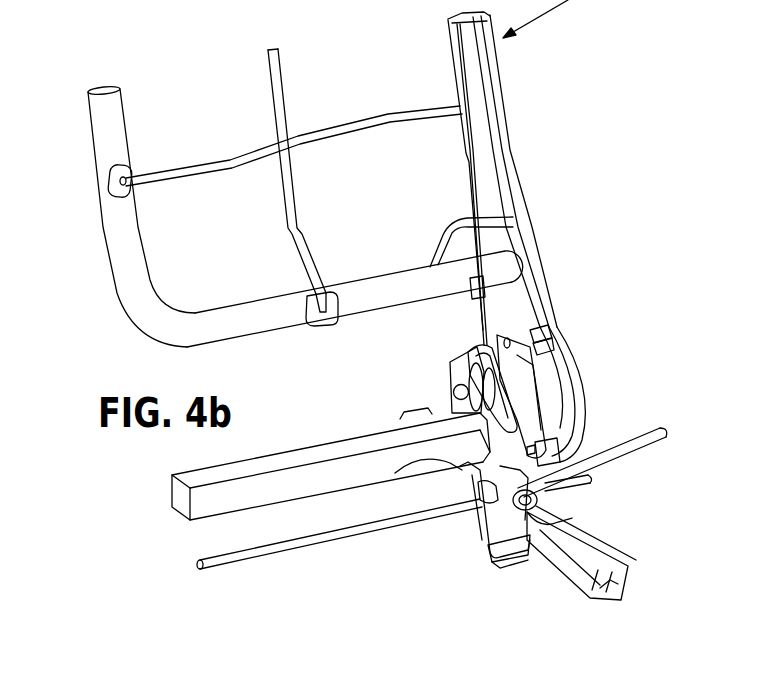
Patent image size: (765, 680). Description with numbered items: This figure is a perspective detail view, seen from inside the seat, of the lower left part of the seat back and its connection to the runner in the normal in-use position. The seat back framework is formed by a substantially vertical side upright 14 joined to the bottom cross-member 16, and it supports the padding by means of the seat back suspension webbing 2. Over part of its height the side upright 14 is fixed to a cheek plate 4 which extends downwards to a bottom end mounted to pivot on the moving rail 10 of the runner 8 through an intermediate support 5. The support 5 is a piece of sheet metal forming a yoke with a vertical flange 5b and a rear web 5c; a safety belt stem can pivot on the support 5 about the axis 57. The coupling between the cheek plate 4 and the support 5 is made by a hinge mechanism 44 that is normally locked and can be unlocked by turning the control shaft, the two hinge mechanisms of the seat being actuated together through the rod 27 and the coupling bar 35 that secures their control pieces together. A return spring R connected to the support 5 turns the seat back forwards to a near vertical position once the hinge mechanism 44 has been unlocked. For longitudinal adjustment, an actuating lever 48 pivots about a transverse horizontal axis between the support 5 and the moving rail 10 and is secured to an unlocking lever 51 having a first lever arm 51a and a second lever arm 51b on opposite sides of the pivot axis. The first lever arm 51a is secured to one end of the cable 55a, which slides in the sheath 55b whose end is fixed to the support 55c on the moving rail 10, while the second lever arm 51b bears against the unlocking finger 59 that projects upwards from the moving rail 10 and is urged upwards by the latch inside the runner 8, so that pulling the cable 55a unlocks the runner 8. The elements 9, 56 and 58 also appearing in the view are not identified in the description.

The seat back suspension webbing 2 is at (278, 87).
The cheek plate 4 is at (508, 150).
The support 5 is at (440, 403).
The vertical flange 5b is at (452, 373).
The rear web 5c is at (462, 360).
The runner 8 is at (623, 547).
The rail end 9 is at (608, 590).
The moving rail 10 is at (577, 543).
The side upright 14 is at (105, 136).
The bottom cross-member 16 is at (225, 317).
The rod 27 is at (466, 78).
The coupling bar 35 is at (540, 347).
The hinge mechanism 44 is at (565, 382).
The actuating lever 48 is at (337, 538).
The unlocking lever 51 is at (470, 500).
The first lever arm 51a is at (493, 523).
The second lever arm 51b is at (413, 462).
The cable 55a is at (527, 525).
The sheath 55b is at (655, 430).
The support 55c is at (560, 520).
The clip base 56 is at (493, 563).
The axis 57 is at (455, 390).
The retainer block 58 is at (548, 465).
The unlocking finger 59 is at (480, 490).
The return spring R is at (540, 330).